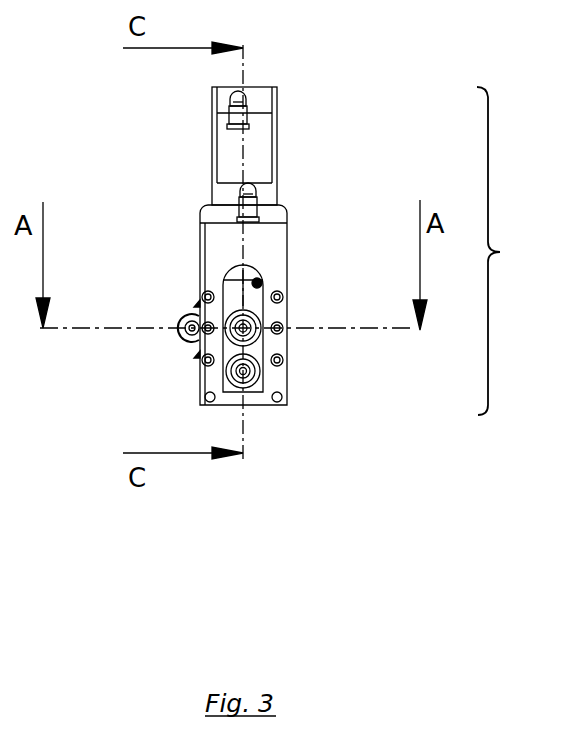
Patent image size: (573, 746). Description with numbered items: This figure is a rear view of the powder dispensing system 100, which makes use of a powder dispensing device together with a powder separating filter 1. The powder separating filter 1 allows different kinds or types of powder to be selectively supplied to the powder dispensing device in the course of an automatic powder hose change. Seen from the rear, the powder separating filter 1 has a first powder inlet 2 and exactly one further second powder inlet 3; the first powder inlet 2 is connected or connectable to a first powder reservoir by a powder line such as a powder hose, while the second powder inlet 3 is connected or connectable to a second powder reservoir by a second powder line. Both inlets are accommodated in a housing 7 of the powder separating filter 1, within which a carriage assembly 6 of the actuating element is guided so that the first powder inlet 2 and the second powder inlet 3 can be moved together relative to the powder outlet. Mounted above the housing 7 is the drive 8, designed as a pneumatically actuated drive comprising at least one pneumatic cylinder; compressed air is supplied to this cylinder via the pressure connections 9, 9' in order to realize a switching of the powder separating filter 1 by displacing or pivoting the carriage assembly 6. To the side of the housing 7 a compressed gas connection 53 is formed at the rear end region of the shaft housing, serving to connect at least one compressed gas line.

The powder dispensing system 100 is at (394, 69).
The powder separating filter 1 is at (523, 262).
The first powder inlet 2 is at (253, 335).
The second powder inlet 3 is at (243, 372).
The carriage assembly 6 is at (232, 295).
The housing 7 is at (226, 250).
The drive 8 is at (225, 158).
The pressure connection 9 is at (179, 99).
The pressure connection 9' is at (182, 188).
The compressed gas connection 53 is at (192, 330).